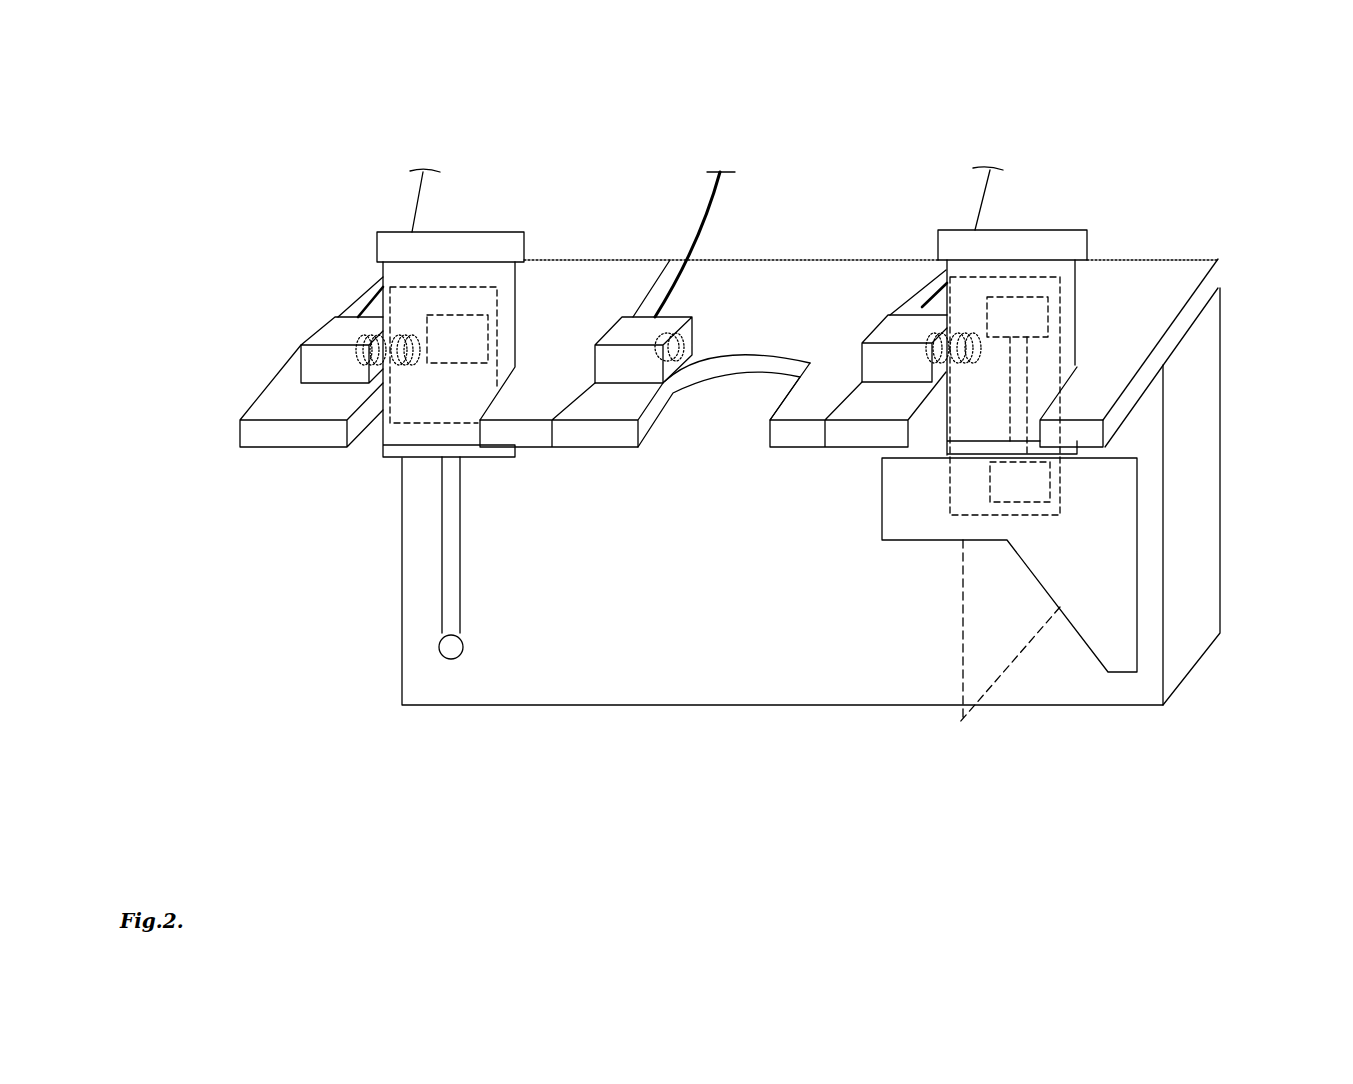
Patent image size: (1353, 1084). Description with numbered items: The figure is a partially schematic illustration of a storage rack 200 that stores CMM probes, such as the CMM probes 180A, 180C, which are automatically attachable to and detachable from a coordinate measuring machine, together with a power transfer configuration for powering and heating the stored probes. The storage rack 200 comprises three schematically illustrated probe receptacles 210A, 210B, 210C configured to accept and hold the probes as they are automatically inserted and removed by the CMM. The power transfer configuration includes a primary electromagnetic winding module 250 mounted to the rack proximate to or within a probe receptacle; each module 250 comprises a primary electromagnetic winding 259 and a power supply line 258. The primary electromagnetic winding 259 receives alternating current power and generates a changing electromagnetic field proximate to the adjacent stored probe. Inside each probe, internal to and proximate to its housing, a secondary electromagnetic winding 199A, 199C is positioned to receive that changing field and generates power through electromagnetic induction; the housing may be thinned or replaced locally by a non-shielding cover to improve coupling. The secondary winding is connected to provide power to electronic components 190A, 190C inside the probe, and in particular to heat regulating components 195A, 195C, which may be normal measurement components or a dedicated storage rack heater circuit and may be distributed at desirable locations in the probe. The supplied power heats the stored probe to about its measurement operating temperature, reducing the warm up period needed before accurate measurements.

The storage rack 200 is at (1190, 225).
The CMM probe 180A is at (306, 320).
The CMM probe 180C is at (1090, 294).
The primary electromagnetic winding module 250 is at (337, 335).
The power supply line 258 is at (700, 232).
The primary electromagnetic winding 259 is at (677, 350).
The secondary electromagnetic winding 199A is at (383, 366).
The heat regulating components 195A is at (457, 353).
The electronic components 190A is at (458, 393).
The secondary electromagnetic winding 199C is at (963, 332).
The heat regulating components 195C is at (1022, 333).
The electronic components 190C is at (1047, 360).
The probe receptacle 210A is at (368, 477).
The probe receptacle 210B is at (698, 457).
The probe receptacle 210C is at (930, 441).